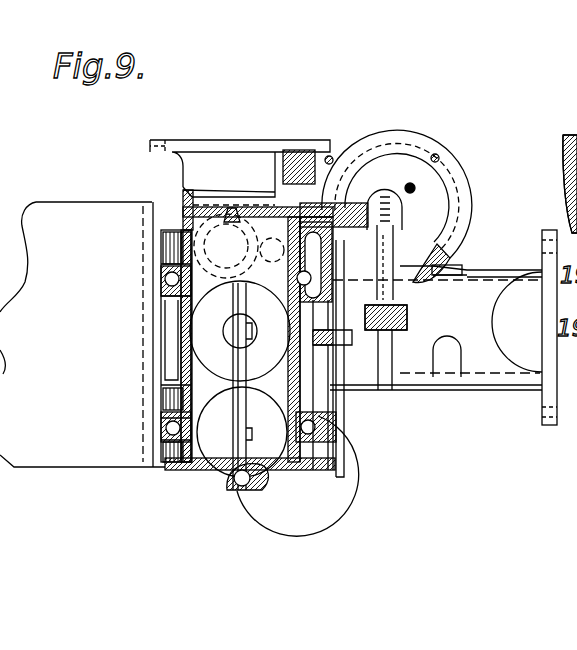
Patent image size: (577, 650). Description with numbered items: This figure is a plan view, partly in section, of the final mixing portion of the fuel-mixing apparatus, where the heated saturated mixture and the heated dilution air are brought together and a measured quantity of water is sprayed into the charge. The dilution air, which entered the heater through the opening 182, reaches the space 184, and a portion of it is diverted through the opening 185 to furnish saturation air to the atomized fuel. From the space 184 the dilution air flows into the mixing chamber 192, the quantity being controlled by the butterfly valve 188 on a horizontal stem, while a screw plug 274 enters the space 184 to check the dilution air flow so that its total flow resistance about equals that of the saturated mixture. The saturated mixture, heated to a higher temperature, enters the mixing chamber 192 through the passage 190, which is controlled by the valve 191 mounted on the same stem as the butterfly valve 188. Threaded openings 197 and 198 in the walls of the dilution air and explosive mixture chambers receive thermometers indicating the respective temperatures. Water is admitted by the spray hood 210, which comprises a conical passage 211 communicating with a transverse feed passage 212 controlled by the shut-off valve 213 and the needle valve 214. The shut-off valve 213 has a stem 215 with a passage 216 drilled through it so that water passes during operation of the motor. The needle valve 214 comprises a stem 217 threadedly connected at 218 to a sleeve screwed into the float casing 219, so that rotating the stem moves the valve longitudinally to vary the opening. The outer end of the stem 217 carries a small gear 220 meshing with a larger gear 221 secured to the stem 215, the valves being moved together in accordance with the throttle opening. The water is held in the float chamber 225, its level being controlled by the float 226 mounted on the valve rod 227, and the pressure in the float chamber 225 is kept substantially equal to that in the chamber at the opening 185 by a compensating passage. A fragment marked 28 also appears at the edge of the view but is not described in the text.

The inlet pipe 28 is at (563, 167).
The opening 182 is at (223, 440).
The space 184 is at (545, 473).
The opening 185 is at (212, 245).
The butterfly valve 188 is at (266, 474).
The passage 190 is at (230, 320).
The valve 191 is at (268, 360).
The mixing chamber 192 is at (205, 316).
The threaded opening 197 is at (165, 468).
The threaded opening 198 is at (165, 258).
The spray hood 210 is at (214, 220).
The conical passage 211 is at (268, 172).
The transverse feed passage 212 is at (272, 215).
The shut-off valve 213 is at (390, 181).
The needle valve 214 is at (437, 207).
The stem 215 is at (343, 474).
The passage 216 is at (325, 200).
The stem 217 is at (340, 213).
The threaded connection 218 is at (433, 270).
The float casing 219 is at (388, 280).
The small gear 220 is at (400, 336).
The larger gear 221 is at (353, 372).
The float chamber 225 is at (440, 186).
The float 226 is at (425, 231).
The valve rod 227 is at (412, 182).
The screw plug 274 is at (576, 420).